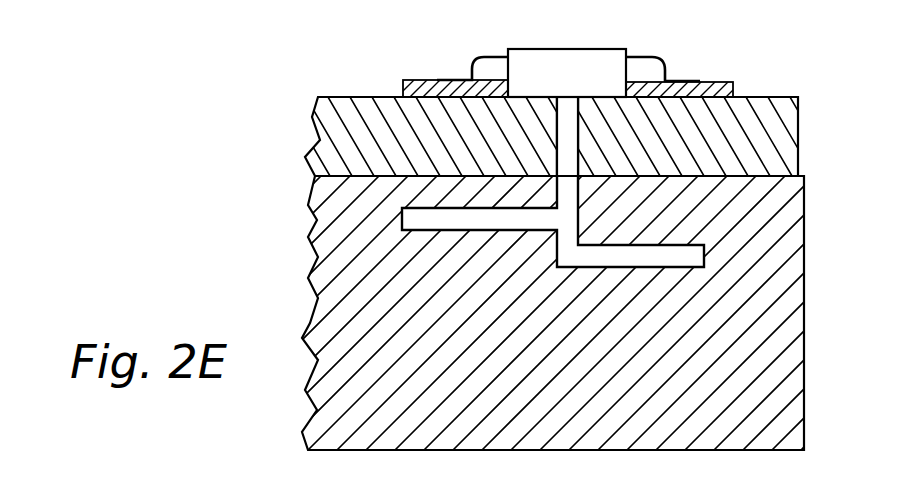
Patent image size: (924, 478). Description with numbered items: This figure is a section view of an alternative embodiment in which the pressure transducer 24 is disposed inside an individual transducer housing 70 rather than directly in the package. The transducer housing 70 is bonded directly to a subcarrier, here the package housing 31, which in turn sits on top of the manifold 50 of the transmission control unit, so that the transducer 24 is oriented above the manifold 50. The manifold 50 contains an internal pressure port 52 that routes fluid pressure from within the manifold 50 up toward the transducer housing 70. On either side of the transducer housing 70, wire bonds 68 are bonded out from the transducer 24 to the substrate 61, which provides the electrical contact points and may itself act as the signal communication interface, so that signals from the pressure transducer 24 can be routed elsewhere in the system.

The pressure transducer 24 is at (584, 48).
The package housing 31 is at (788, 138).
The manifold 50 is at (815, 177).
The internal pressure port 52 is at (402, 218).
The substrate 61 is at (727, 82).
The wire bond 68 is at (468, 63).
The transducer housing 70 is at (543, 55).